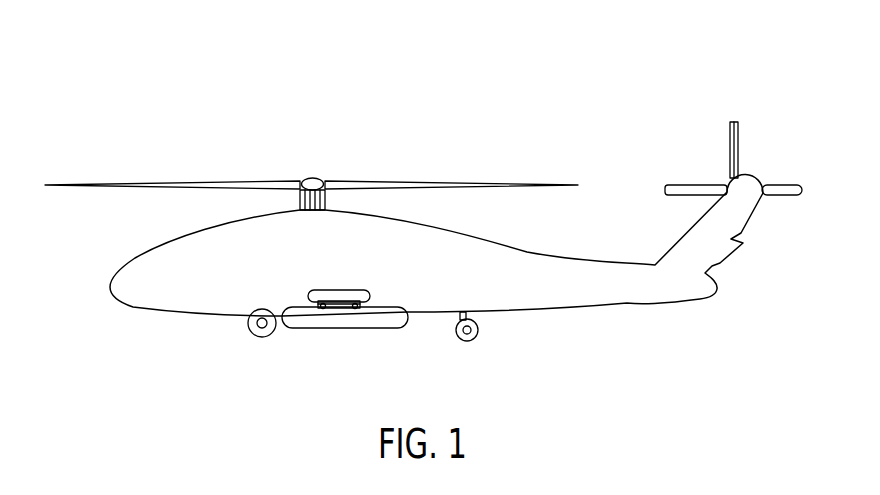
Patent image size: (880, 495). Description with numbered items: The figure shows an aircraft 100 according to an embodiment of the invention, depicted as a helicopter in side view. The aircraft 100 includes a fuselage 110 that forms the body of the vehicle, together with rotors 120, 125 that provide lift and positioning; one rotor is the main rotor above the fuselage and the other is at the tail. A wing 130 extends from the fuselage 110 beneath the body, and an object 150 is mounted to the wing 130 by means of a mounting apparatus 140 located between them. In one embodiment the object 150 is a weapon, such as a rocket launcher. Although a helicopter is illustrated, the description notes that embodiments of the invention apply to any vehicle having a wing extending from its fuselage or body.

The aircraft 100 is at (503, 70).
The fuselage 110 is at (626, 300).
The rotor 120 is at (478, 183).
The rotor 125 is at (739, 150).
The wing 130 is at (338, 290).
The mounting apparatus 140 is at (375, 300).
The object 150 is at (338, 318).